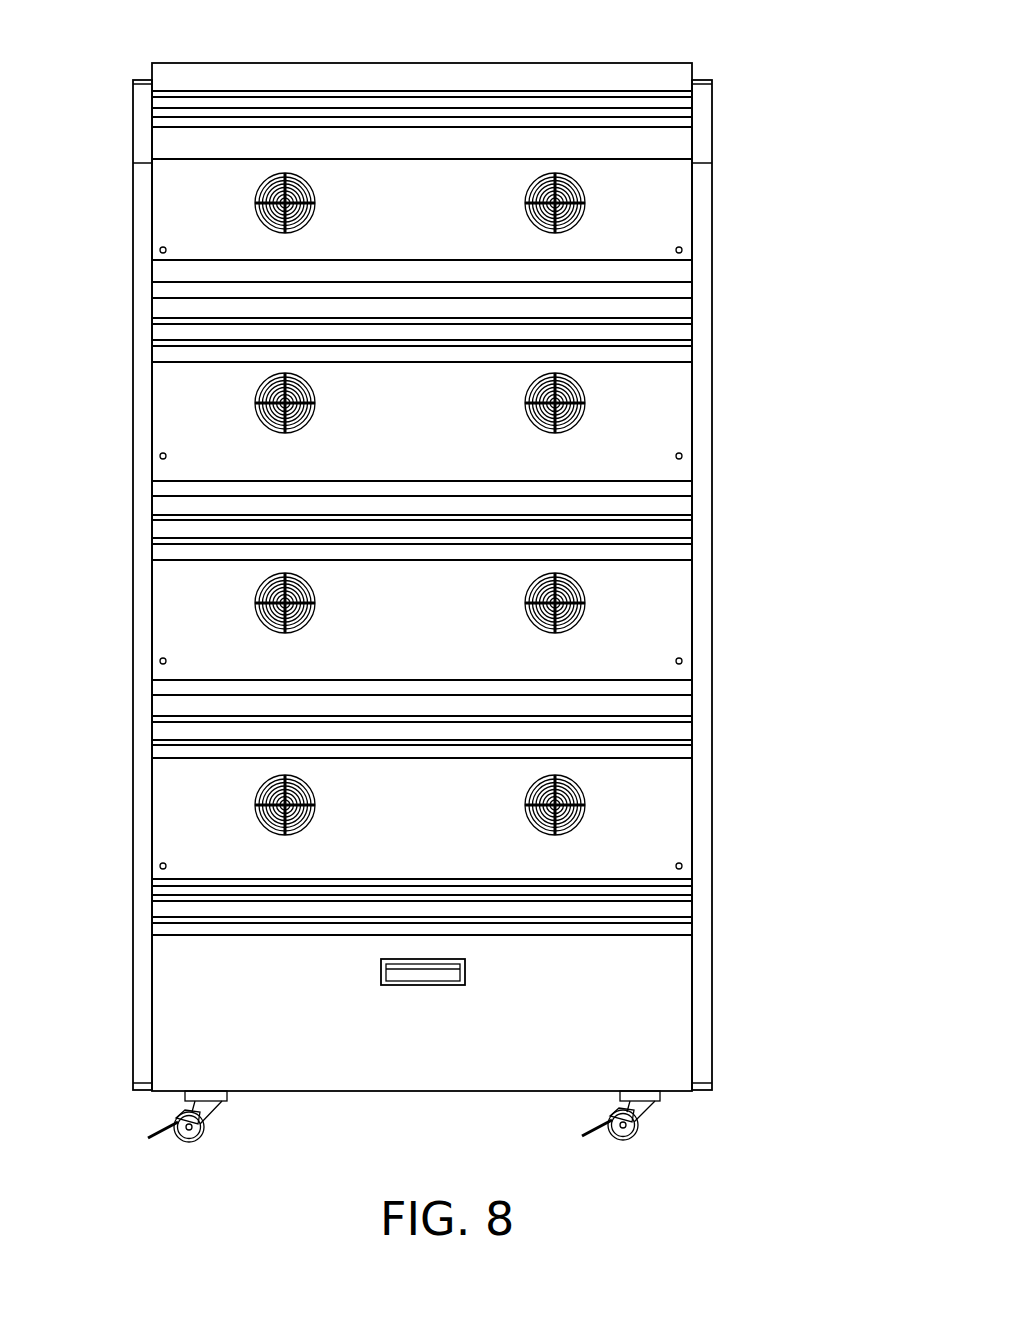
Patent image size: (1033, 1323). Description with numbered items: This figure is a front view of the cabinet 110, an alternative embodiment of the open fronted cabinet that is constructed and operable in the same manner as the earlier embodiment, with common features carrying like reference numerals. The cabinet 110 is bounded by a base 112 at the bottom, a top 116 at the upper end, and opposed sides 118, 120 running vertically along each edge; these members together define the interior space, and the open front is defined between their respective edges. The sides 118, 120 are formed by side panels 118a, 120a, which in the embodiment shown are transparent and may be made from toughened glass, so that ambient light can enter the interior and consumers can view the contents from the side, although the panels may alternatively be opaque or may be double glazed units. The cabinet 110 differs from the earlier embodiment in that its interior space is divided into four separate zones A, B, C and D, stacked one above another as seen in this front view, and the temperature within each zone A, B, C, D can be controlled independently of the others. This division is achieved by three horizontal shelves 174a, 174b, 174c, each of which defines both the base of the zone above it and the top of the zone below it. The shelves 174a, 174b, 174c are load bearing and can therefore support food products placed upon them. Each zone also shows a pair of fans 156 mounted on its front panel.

The cabinet 110 is at (738, 72).
The base 112 is at (321, 1102).
The top 116 is at (368, 85).
The side 118 is at (738, 342).
The side panel 118a is at (713, 455).
The side 120 is at (105, 273).
The side panel 120a is at (130, 315).
The fan 156 is at (314, 209).
The horizontal shelf 174a is at (683, 305).
The horizontal shelf 174b is at (683, 533).
The horizontal shelf 174c is at (683, 738).
The zone A is at (230, 203).
The zone B is at (230, 414).
The zone C is at (230, 604).
The zone D is at (230, 806).